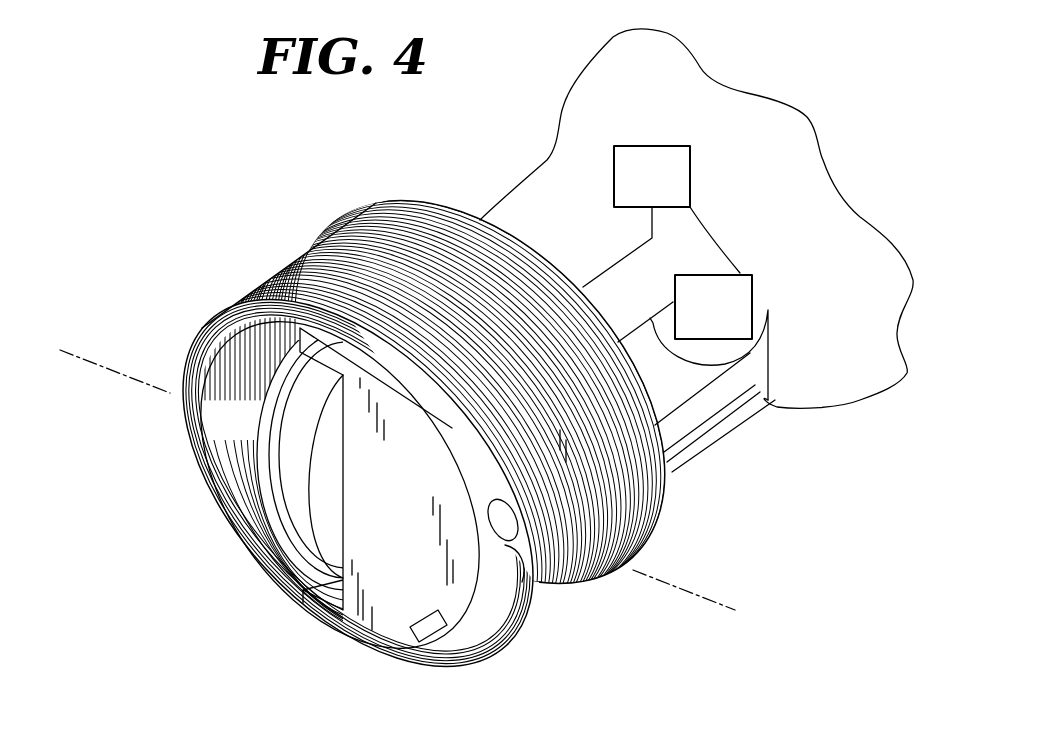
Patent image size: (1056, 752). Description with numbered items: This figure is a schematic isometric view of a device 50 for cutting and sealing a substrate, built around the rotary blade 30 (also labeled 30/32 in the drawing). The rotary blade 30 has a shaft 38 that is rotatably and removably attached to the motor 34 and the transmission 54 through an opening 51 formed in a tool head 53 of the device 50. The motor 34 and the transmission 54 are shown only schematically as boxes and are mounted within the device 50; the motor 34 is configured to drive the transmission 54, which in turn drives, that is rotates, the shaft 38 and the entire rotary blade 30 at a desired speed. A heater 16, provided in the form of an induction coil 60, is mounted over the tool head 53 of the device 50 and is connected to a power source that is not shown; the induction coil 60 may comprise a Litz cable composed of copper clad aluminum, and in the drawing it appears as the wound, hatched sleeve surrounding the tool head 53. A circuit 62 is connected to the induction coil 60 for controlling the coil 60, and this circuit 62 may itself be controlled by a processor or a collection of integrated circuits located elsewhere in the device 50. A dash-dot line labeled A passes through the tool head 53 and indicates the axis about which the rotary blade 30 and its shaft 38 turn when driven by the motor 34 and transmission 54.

The heater 16 is at (345, 268).
The induction coil 60 is at (428, 429).
The rotary blade 30 is at (257, 412).
The lens barrel 32 is at (411, 475).
The shaft 38 is at (249, 440).
The opening 51 is at (413, 553).
The tool head 53 is at (503, 598).
The circuit 62 is at (547, 160).
The motor 34 is at (693, 337).
The transmission 54 is at (722, 370).
The device 50 is at (874, 181).
The optical axis A is at (424, 498).